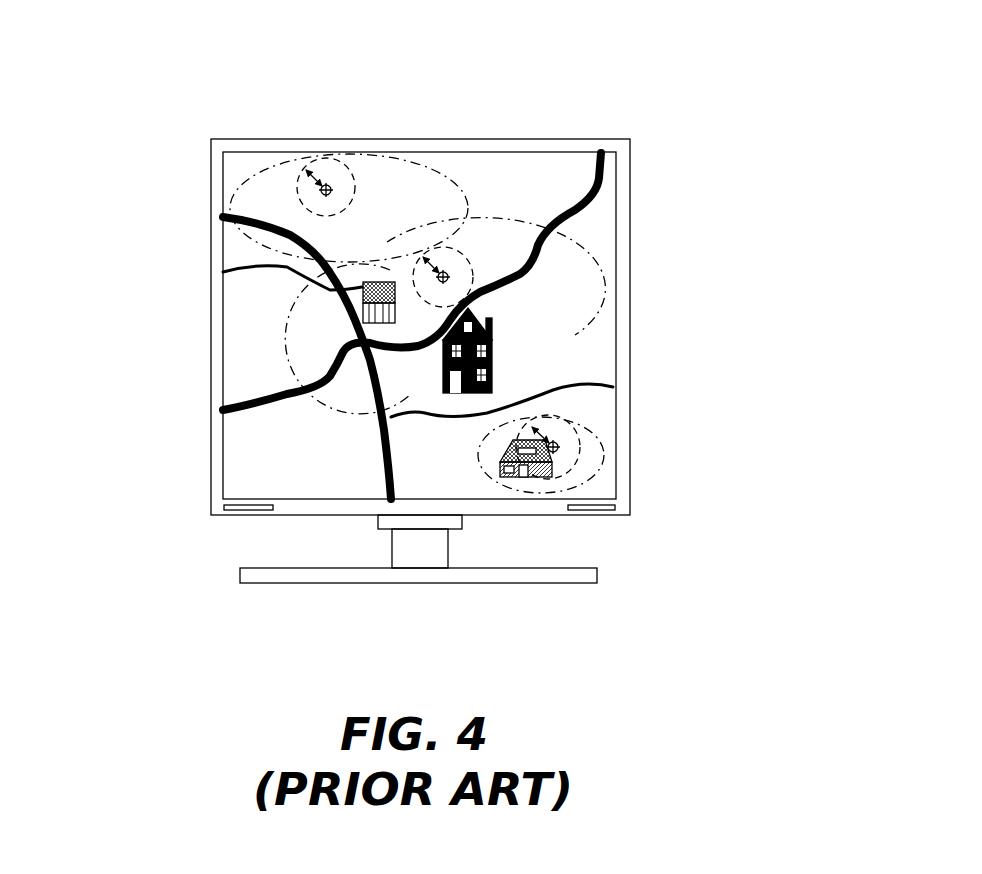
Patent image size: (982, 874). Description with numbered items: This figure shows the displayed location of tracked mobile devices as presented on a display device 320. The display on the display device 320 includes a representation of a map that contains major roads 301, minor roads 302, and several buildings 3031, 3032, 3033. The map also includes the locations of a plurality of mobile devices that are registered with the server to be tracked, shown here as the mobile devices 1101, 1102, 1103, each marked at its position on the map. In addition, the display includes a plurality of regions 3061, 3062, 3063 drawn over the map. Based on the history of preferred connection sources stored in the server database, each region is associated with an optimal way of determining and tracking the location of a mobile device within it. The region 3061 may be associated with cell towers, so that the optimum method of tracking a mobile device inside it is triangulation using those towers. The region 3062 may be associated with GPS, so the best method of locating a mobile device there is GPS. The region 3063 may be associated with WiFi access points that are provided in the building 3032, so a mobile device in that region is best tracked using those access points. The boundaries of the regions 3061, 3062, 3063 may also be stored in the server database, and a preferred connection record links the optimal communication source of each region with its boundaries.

The display device 320 is at (258, 135).
The major roads 301 is at (594, 193).
The minor roads 302 is at (599, 378).
The region 3061 is at (348, 408).
The region 3062 is at (236, 173).
The region 3063 is at (606, 443).
The mobile device 1101 is at (448, 262).
The mobile device 1102 is at (567, 448).
The mobile device 1103 is at (332, 174).
The building 3031 is at (496, 355).
The building 3032 is at (516, 480).
The building 3033 is at (382, 325).